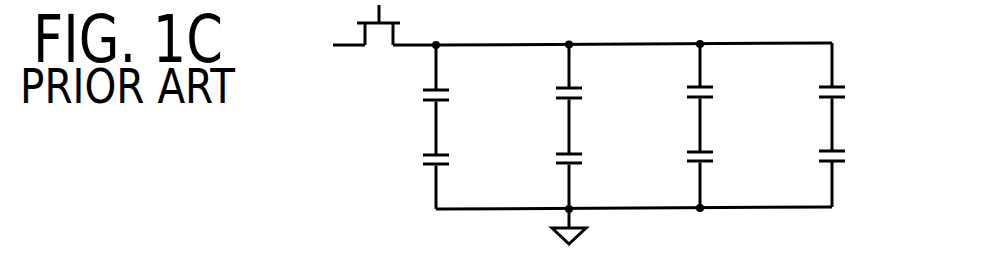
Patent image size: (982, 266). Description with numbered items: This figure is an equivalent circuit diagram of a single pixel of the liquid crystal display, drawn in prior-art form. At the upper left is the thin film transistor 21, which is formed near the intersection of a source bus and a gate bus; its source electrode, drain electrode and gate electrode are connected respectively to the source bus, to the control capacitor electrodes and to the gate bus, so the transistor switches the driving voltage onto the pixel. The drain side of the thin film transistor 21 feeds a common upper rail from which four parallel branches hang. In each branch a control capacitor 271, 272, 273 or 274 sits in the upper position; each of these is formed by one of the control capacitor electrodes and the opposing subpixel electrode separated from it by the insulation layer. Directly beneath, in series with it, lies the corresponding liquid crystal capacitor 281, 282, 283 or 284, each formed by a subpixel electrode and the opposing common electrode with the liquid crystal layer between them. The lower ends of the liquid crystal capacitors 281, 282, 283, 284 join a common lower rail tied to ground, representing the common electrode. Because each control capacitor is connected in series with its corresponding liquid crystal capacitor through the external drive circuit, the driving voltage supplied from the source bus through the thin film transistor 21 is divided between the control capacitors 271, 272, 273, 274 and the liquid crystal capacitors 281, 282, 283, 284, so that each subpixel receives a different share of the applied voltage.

The thin film transistor 21 is at (370, 53).
The control capacitor 271 is at (415, 98).
The control capacitor 272 is at (552, 93).
The control capacitor 273 is at (683, 92).
The control capacitor 274 is at (813, 90).
The liquid crystal capacitor 281 is at (413, 162).
The liquid crystal capacitor 282 is at (547, 157).
The liquid crystal capacitor 283 is at (678, 153).
The liquid crystal capacitor 284 is at (813, 153).